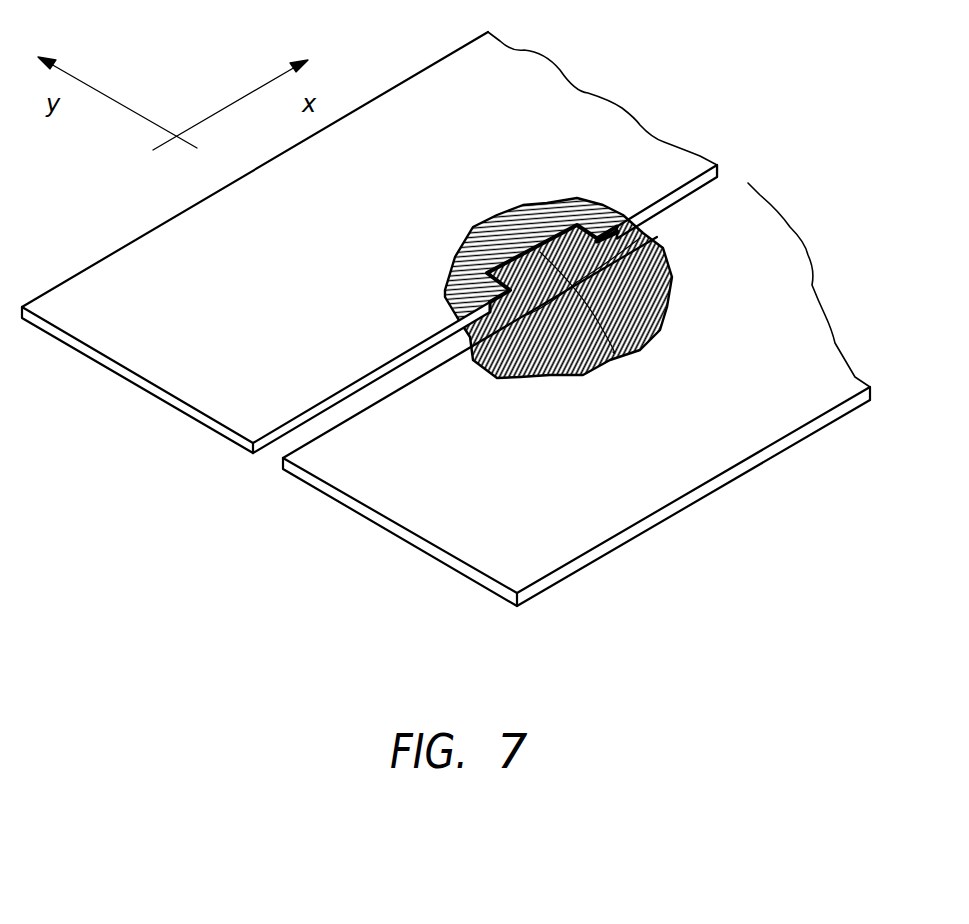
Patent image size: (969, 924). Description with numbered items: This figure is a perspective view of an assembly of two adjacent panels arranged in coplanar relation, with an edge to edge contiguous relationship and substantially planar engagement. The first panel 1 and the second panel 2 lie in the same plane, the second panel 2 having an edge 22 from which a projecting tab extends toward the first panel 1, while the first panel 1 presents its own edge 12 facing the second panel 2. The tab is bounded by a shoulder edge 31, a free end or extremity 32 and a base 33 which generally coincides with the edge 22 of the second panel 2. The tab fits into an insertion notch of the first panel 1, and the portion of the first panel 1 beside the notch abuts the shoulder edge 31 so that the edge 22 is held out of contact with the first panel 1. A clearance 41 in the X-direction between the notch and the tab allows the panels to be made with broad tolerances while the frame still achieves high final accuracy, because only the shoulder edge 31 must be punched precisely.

The panel 1 is at (163, 377).
The panel 2 is at (403, 513).
The edge of first plate 12 is at (262, 455).
The edge 22 is at (282, 468).
The shoulder edge 31 is at (652, 250).
The free end 32 is at (612, 357).
The base 33 is at (493, 363).
The clearance 41 is at (587, 233).